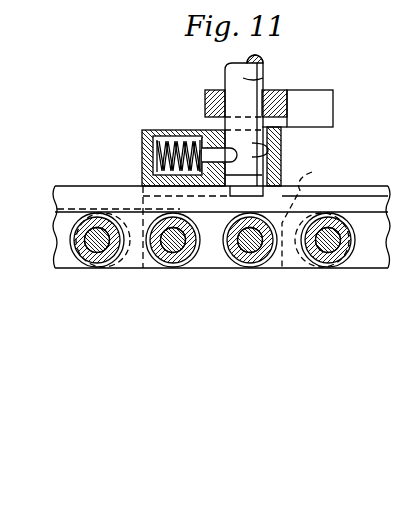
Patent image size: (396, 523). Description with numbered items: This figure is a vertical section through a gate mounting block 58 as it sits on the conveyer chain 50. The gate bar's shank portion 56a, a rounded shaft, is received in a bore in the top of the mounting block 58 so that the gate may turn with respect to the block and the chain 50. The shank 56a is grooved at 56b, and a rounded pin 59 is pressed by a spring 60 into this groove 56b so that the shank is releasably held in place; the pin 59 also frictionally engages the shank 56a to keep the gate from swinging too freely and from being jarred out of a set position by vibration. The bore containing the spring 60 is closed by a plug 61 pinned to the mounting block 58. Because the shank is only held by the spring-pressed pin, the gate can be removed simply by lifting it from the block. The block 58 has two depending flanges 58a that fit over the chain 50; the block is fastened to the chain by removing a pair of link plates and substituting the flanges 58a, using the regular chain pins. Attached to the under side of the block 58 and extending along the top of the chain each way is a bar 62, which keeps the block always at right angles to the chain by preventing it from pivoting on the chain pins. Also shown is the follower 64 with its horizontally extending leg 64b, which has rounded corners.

The chain 50 is at (82, 236).
The shank portion 56a is at (262, 72).
The groove 56b is at (282, 151).
The mounting block 58 is at (283, 162).
The depending flanges 58a is at (313, 216).
The rounded pin 59 is at (222, 152).
The spring 60 is at (168, 130).
The plug 61 is at (143, 141).
The bar 62 is at (73, 199).
The follower 64 is at (214, 91).
The leg 64b is at (320, 101).